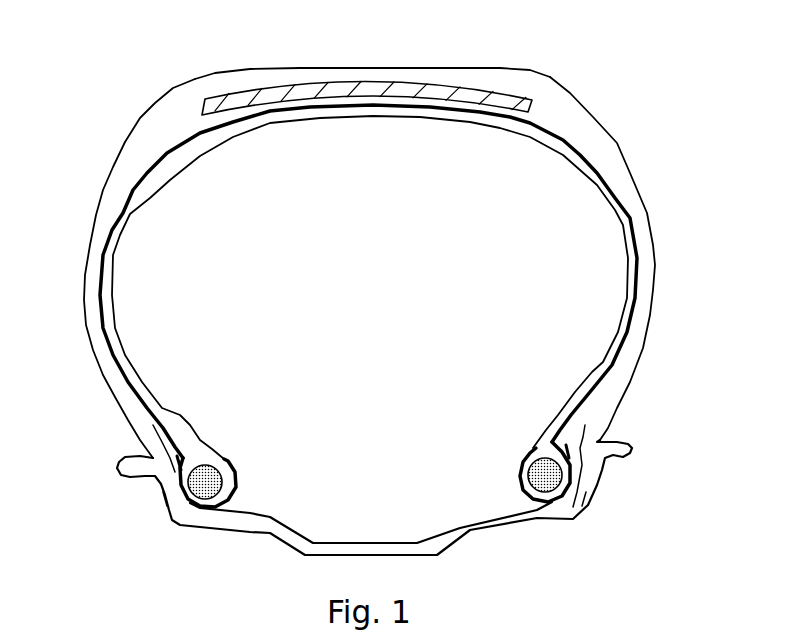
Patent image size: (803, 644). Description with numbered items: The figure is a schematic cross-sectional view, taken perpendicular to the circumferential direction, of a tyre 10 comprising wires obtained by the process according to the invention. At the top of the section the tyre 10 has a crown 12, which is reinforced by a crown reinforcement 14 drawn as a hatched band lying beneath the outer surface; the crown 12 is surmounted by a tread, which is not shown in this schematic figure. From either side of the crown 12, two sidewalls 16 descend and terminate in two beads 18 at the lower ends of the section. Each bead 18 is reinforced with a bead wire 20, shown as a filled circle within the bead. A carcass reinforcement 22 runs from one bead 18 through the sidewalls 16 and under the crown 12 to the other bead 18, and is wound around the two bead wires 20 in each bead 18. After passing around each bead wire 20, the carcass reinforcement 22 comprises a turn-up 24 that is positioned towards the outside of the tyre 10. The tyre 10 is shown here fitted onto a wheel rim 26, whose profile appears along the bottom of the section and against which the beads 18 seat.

The tyre 10 is at (674, 214).
The crown 12 is at (497, 78).
The crown reinforcement 14 is at (407, 93).
The sidewall 16 is at (91, 280).
The bead 18 is at (207, 443).
The bead wire 20 is at (215, 477).
The carcass reinforcement 22 is at (125, 193).
The turn-up 24 is at (140, 428).
The wheel rim 26 is at (165, 495).